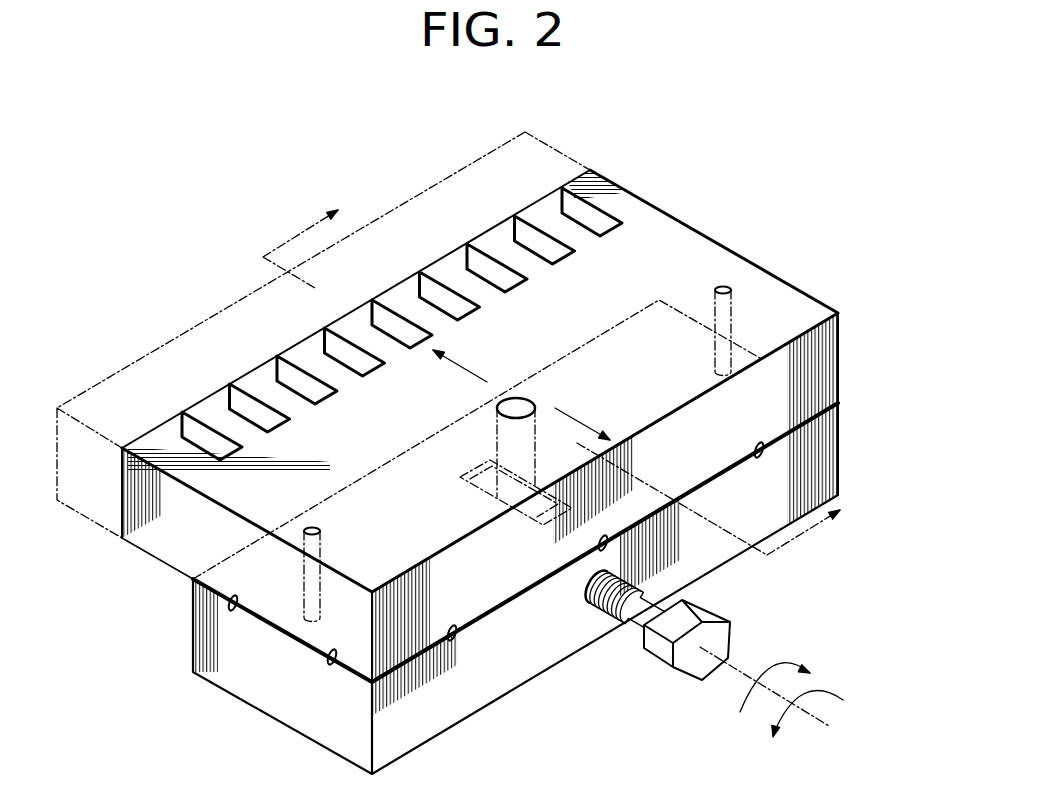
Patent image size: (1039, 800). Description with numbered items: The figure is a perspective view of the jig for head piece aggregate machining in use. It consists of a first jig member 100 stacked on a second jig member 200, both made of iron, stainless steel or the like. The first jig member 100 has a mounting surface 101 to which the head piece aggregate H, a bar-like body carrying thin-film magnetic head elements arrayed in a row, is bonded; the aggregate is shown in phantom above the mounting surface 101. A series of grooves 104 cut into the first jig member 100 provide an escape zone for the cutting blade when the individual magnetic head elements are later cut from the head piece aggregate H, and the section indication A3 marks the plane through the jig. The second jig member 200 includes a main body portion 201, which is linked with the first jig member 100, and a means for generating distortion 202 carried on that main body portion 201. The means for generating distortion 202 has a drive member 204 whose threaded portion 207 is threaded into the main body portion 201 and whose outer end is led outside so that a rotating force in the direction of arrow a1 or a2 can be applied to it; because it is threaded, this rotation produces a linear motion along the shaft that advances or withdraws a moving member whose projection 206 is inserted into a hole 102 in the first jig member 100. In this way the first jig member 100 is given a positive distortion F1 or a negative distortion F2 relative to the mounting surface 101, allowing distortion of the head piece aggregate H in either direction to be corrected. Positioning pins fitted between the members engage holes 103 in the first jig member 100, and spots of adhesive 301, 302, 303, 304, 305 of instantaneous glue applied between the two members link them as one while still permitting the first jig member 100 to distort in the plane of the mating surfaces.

The first jig member 100 is at (632, 182).
The mounting surface 101 is at (477, 235).
The hole 102 is at (514, 402).
The holes 103 is at (311, 528).
The grooves 104 is at (268, 361).
The second jig member 200 is at (190, 678).
The main body portion 201 is at (203, 620).
The means for generating distortion 202 is at (686, 669).
The drive member 204 is at (728, 628).
The projection 206 is at (523, 400).
The threaded portion 207 is at (603, 616).
The spot of adhesive 301 is at (233, 612).
The spot of adhesive 302 is at (332, 665).
The spot of adhesive 303 is at (453, 642).
The spot of adhesive 304 is at (608, 548).
The spot of adhesive 305 is at (763, 455).
The head piece aggregate H is at (527, 133).
The section line A3 is at (572, 369).
The positive distortion F1 is at (454, 377).
The negative distortion F2 is at (596, 419).
The rotation direction arrow a1 is at (764, 682).
The rotation direction arrow a2 is at (805, 729).